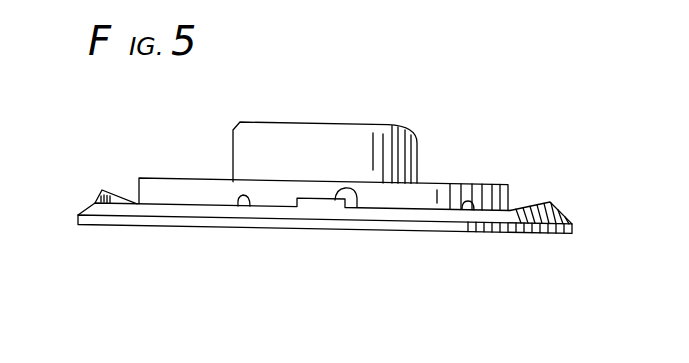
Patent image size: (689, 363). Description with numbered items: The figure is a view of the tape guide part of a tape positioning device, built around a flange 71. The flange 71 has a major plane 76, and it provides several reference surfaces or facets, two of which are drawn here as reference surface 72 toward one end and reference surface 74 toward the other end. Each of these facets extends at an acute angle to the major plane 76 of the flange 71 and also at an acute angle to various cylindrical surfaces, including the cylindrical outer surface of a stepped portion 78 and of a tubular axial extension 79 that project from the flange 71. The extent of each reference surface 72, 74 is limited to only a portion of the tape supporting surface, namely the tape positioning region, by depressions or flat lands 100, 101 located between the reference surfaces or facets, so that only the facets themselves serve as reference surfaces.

The flange 71 is at (195, 178).
The reference surface 72 is at (113, 191).
The reference surface 74 is at (536, 202).
The major plane 76 is at (146, 225).
The stepped portion 78 is at (458, 187).
The tubular axial extension 79 is at (417, 142).
The flat land 100 is at (238, 206).
The flat land 101 is at (461, 206).